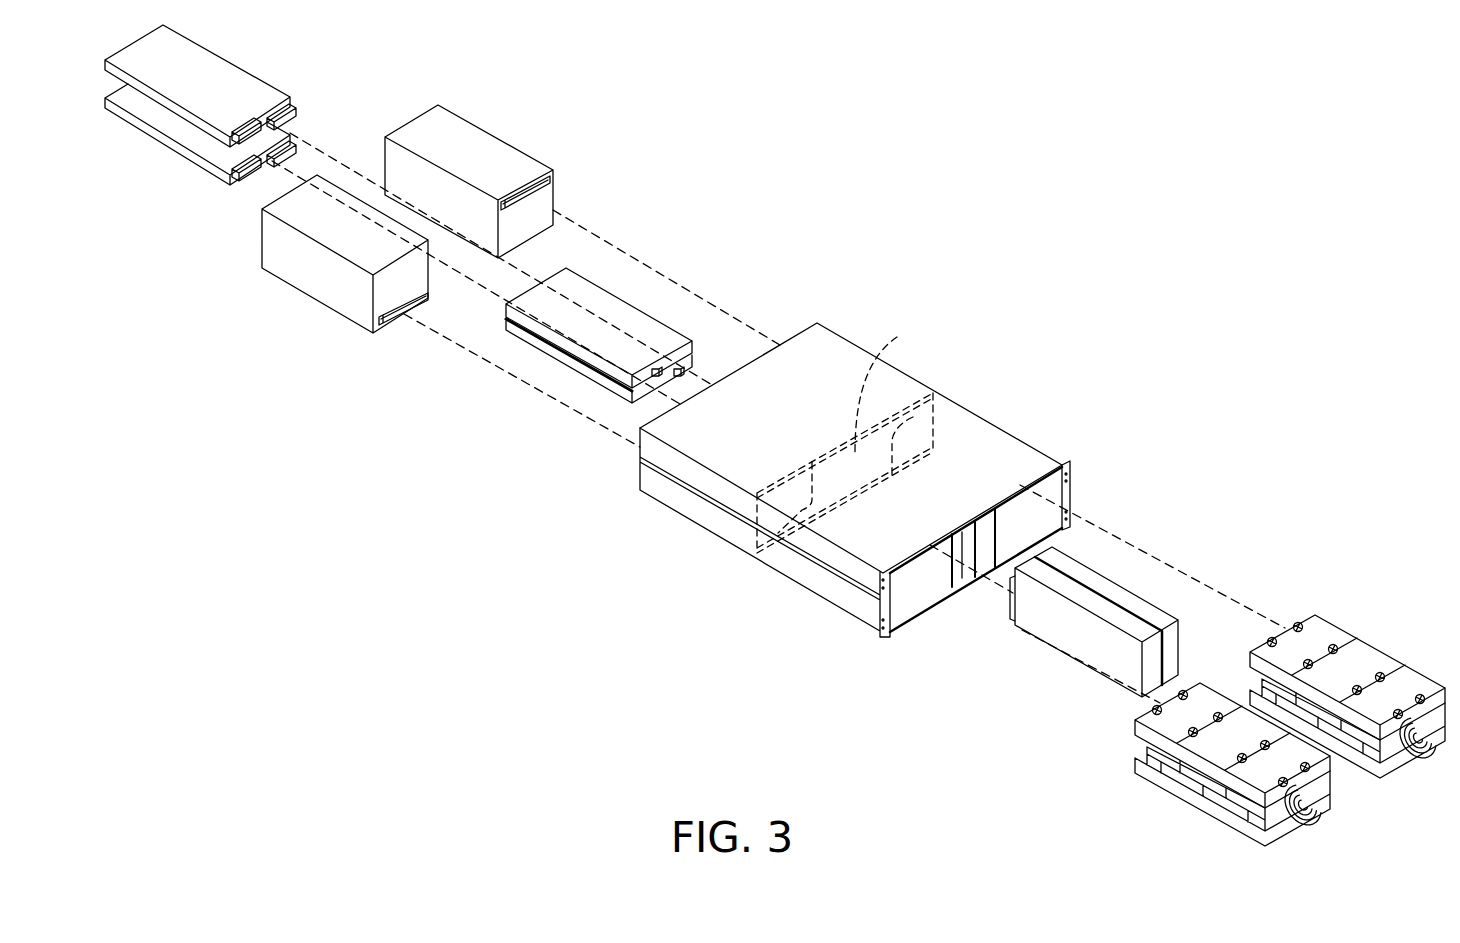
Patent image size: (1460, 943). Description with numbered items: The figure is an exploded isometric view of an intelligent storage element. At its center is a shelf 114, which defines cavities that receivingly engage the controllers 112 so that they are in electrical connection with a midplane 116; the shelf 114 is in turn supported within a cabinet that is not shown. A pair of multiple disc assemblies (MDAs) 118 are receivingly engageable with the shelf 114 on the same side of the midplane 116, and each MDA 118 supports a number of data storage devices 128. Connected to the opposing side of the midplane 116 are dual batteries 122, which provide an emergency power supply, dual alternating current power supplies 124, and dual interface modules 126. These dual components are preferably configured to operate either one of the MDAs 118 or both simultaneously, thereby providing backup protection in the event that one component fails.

The controller 112 is at (1130, 600).
The shelf 114 is at (706, 527).
The midplane 116 is at (850, 436).
The multiple disc assembly (MDA) 118 is at (1333, 615).
The battery 122 is at (592, 295).
The alternating current power supply 124 is at (465, 150).
The interface module 126 is at (228, 82).
The data storage device 128 is at (1310, 612).